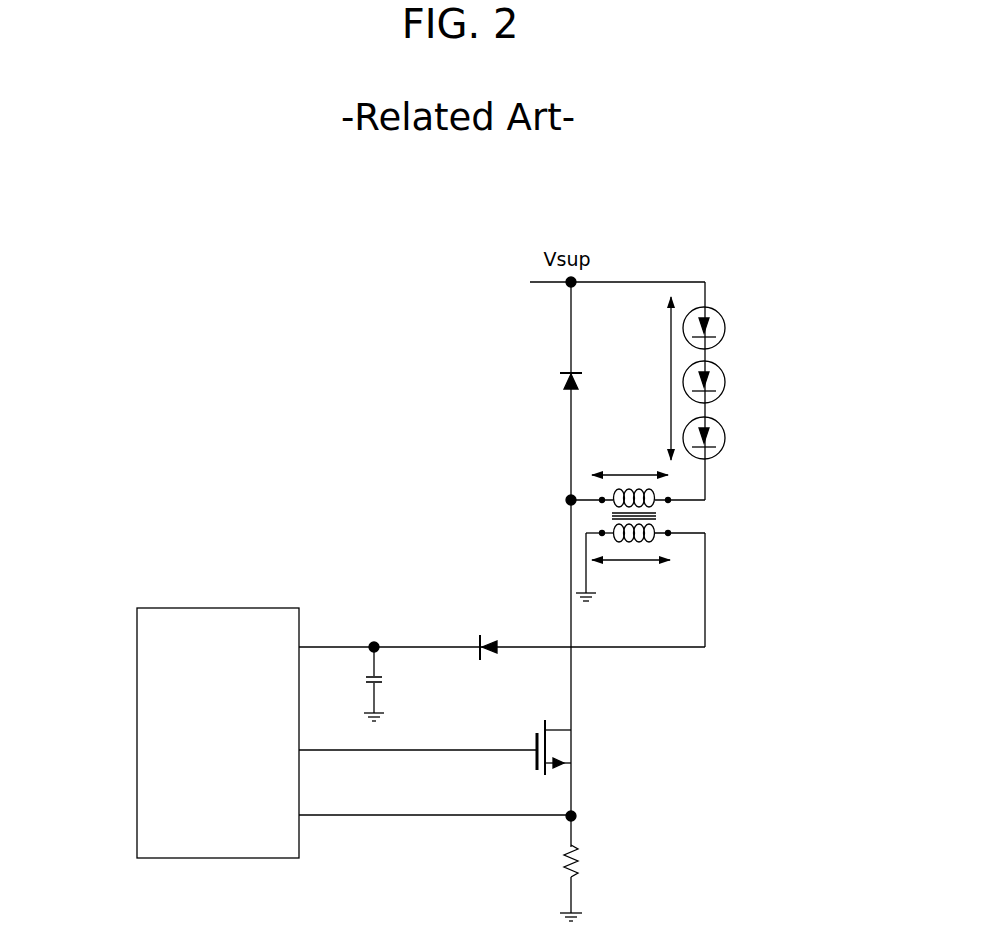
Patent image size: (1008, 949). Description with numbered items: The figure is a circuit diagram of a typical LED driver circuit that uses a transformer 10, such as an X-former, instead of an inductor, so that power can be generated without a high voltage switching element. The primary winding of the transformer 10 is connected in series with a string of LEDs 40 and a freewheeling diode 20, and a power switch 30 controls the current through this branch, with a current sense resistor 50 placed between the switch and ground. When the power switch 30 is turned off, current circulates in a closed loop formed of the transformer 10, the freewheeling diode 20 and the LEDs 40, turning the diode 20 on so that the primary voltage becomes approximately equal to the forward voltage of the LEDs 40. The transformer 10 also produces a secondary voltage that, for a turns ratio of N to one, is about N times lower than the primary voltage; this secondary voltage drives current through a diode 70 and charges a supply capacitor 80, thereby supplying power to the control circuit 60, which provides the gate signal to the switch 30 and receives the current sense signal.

The transformer 10 is at (658, 540).
The freewheeling diode DFW 20 is at (590, 362).
The power switch MSW 30 is at (576, 747).
The LEDs 40 is at (728, 440).
The current sensing resistor Rcs 50 is at (578, 849).
The control circuit 60 is at (137, 735).
The diode DM 70 is at (483, 668).
The VDD capacitor CVDD 80 is at (383, 695).